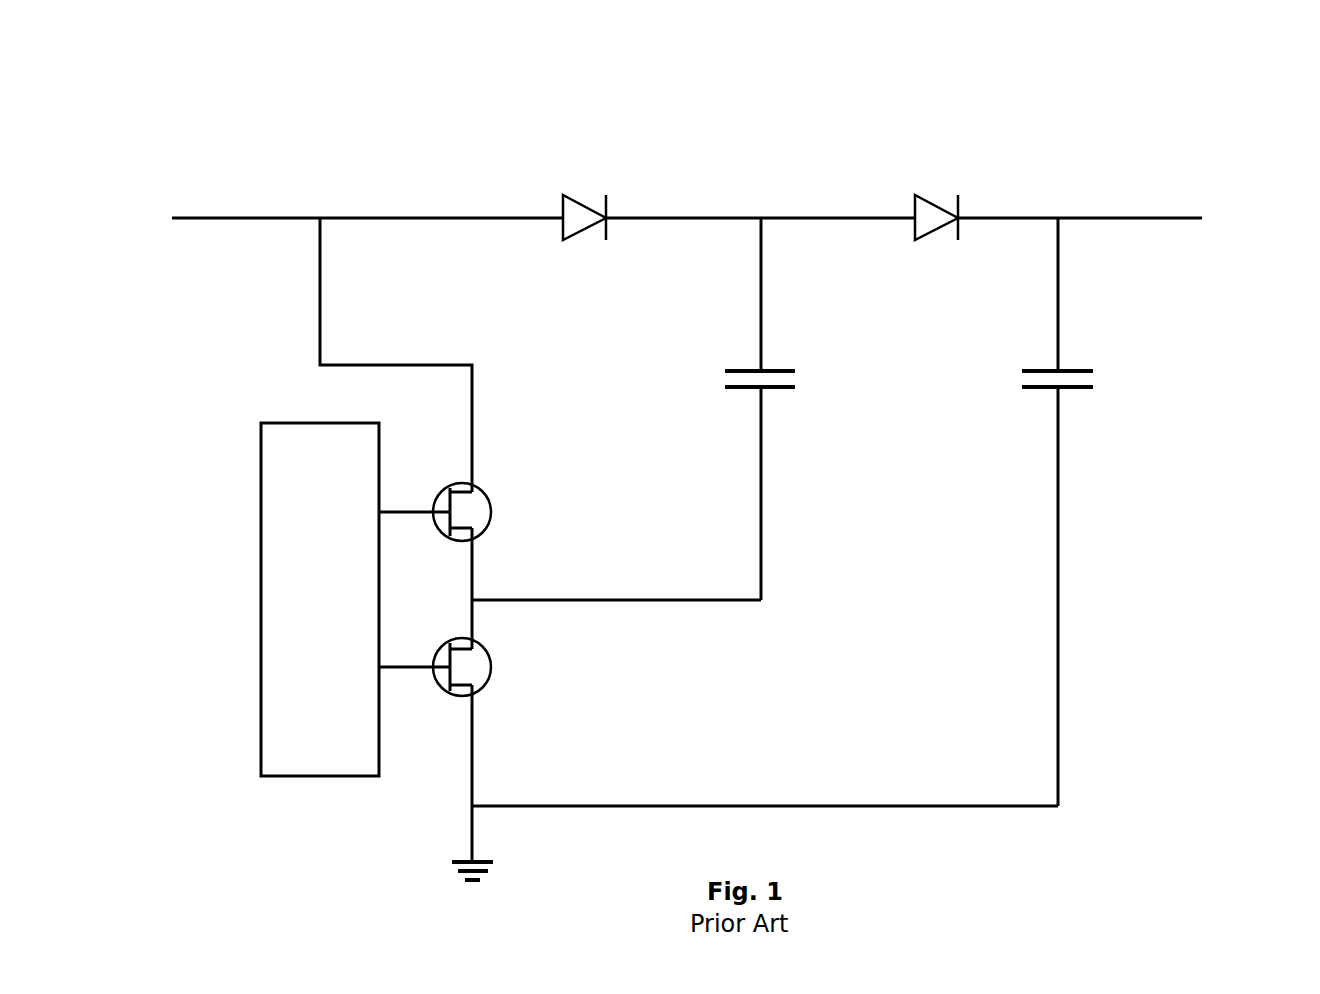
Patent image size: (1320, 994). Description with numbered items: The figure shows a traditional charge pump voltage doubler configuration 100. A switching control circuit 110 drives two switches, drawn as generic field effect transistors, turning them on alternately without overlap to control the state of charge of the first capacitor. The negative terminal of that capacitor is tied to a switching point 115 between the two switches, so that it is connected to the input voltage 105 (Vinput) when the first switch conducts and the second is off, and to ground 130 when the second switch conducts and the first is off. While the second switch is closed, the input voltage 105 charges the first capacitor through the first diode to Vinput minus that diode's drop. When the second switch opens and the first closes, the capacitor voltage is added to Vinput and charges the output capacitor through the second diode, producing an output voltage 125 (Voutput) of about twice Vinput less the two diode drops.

The charge pump voltage doubler configuration 100 is at (733, 452).
The input voltage 105 is at (183, 240).
The switching control circuit 110 is at (297, 794).
The switching point 115 is at (490, 584).
The output voltage 125 is at (1207, 236).
The ground 130 is at (490, 838).